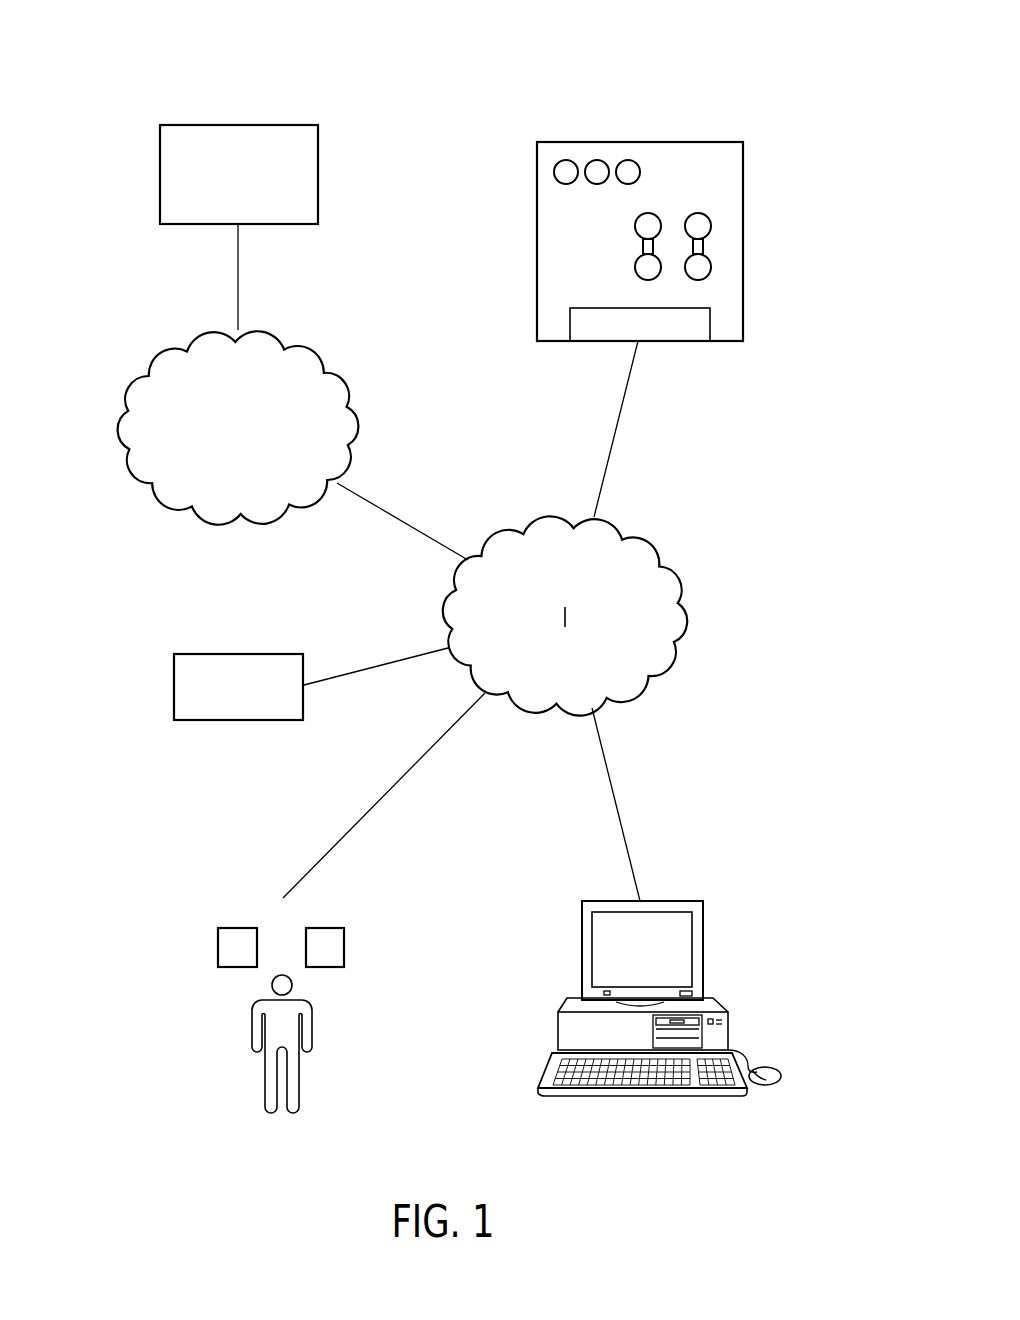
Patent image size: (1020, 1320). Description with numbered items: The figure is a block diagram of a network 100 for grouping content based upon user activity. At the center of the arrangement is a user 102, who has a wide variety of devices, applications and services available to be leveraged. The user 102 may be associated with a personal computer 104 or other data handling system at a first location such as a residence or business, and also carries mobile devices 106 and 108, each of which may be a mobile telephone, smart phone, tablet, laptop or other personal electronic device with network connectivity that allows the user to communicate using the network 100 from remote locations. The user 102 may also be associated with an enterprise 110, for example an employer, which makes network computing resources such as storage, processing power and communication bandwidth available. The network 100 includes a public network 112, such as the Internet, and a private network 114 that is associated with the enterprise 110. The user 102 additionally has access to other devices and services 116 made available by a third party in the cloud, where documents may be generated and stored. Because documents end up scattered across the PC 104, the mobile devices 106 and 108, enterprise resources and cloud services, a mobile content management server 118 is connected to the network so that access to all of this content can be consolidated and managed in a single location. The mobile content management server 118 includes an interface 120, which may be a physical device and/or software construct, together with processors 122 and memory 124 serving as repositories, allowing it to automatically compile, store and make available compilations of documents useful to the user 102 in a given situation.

The network 100 is at (670, 62).
The user 102 is at (312, 1026).
The personal computer 104 is at (703, 949).
The mobile device 106 is at (218, 948).
The mobile device 108 is at (344, 948).
The enterprise 110 is at (237, 125).
The public network 112 is at (693, 617).
The private network 114 is at (119, 398).
The devices and services 116 is at (174, 690).
The mobile content management server 118 is at (743, 229).
The interface 120 is at (611, 308).
The processors 122 is at (597, 184).
The memory 124 is at (698, 213).